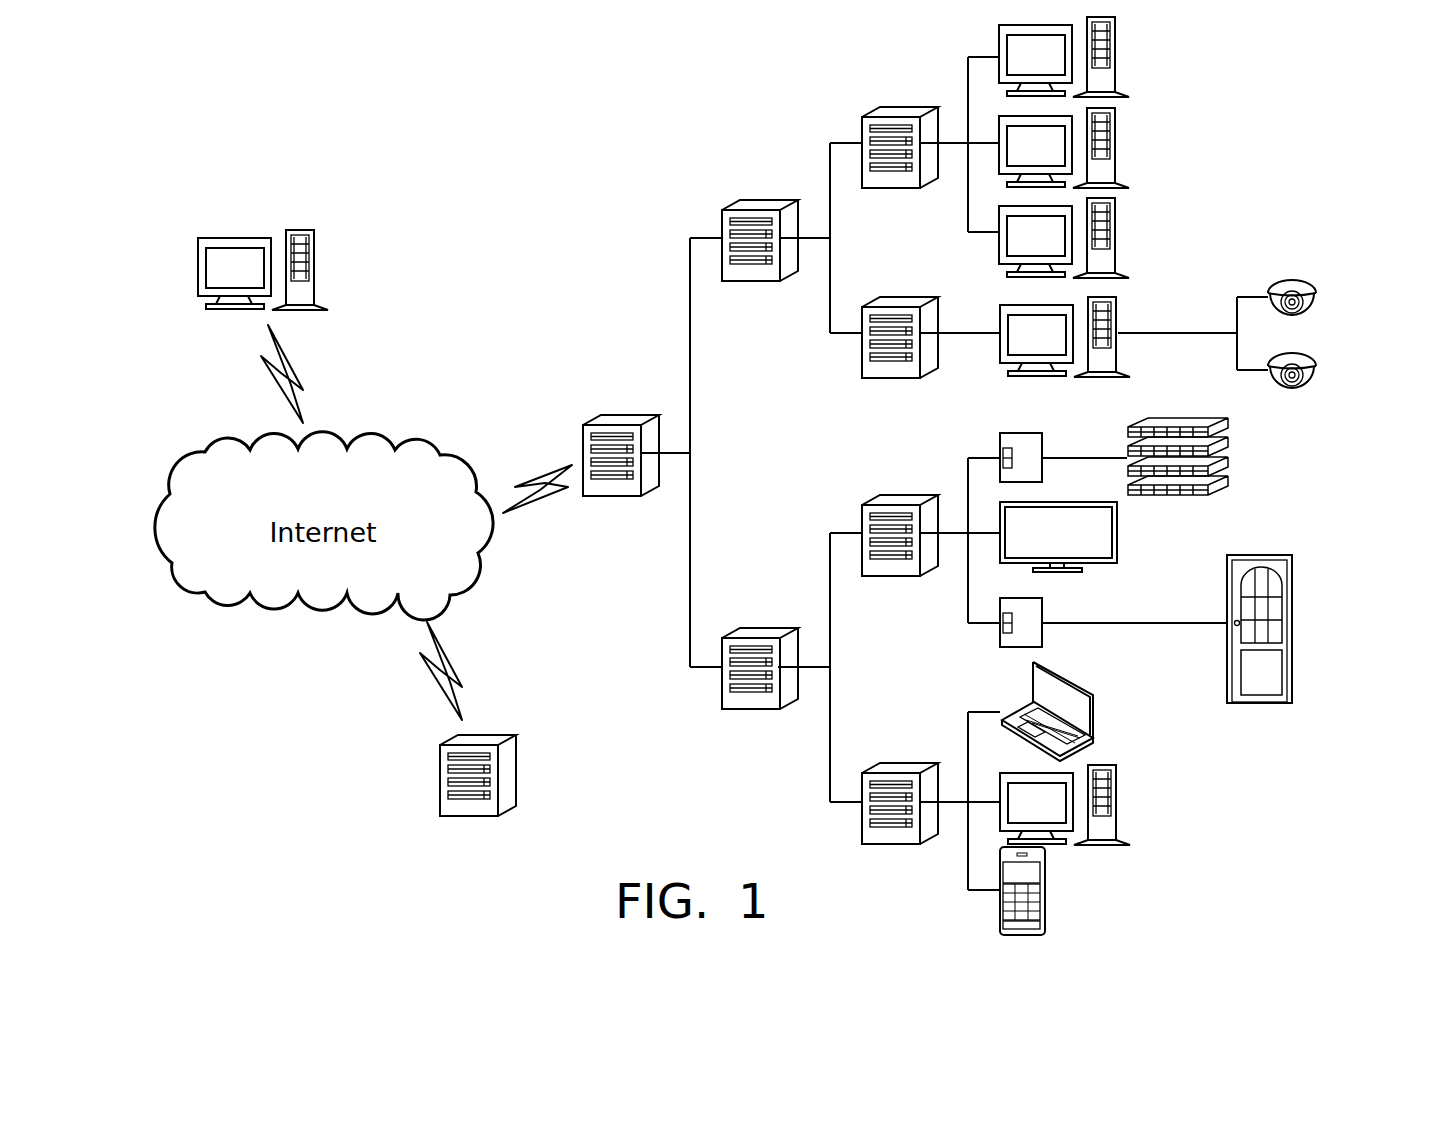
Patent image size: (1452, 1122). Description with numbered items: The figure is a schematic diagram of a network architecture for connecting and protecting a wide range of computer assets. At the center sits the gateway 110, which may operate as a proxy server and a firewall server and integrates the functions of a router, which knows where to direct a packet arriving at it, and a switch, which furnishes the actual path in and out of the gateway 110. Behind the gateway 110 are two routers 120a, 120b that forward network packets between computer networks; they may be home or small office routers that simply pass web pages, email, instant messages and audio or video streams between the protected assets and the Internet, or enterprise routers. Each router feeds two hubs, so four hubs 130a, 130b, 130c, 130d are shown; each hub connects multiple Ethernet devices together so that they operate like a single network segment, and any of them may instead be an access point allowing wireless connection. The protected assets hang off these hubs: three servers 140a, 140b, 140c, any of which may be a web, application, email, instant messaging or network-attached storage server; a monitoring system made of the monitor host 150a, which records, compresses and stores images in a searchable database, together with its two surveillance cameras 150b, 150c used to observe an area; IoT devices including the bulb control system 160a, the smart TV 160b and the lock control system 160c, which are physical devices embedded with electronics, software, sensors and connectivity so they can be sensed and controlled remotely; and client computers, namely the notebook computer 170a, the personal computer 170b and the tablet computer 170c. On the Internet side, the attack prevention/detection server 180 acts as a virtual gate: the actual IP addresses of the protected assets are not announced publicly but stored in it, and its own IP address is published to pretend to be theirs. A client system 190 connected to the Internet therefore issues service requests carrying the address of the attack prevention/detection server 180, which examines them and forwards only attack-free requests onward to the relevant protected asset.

The gateway 110 is at (618, 420).
The router 120a is at (758, 205).
The router 120b is at (758, 633).
The hub 130a is at (897, 112).
The hub 130b is at (897, 302).
The hub 130c is at (897, 500).
The hub 130d is at (897, 770).
The server 140a is at (1117, 55).
The server 140b is at (1117, 145).
The server 140c is at (1117, 233).
The monitor host 150a is at (1118, 303).
The surveillance camera 150b is at (1318, 290).
The surveillance camera 150c is at (1318, 363).
The bulb control system 160a is at (1020, 433).
The smart TV 160b is at (1117, 531).
The lock control system 160c is at (1042, 608).
The notebook computer 170a is at (1097, 717).
The personal computer 170b is at (1117, 803).
The tablet computer 170c is at (1047, 890).
The attack prevention/detection server 180 is at (508, 773).
The client system 190 is at (318, 269).